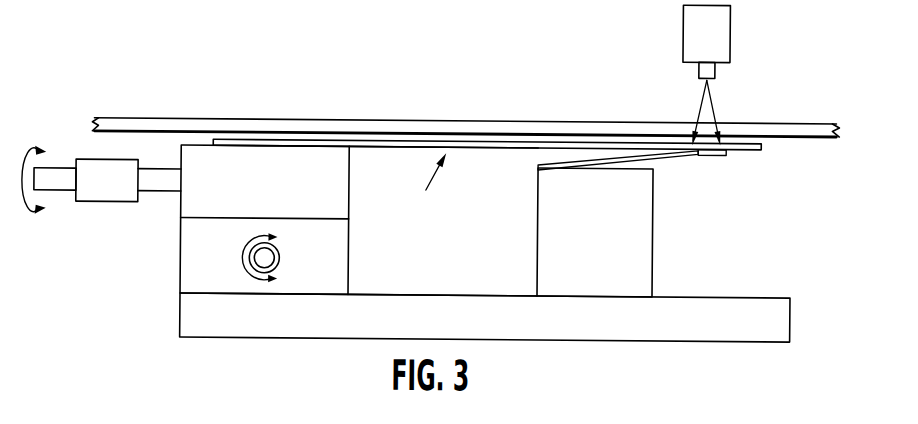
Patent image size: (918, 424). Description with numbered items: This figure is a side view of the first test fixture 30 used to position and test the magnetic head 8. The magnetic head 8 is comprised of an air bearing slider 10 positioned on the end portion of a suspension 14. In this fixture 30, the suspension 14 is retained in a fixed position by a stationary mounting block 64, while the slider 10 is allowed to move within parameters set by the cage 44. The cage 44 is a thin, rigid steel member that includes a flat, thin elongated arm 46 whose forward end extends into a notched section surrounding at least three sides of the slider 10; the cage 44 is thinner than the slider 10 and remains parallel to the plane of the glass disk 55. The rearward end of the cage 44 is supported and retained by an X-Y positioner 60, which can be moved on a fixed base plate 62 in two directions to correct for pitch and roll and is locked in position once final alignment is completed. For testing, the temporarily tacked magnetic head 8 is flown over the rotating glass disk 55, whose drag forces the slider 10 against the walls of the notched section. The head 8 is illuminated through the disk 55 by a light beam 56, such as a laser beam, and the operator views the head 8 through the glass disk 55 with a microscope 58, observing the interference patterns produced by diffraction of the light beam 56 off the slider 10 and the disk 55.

The magnetic head 8 is at (728, 160).
The air bearing slider 10 is at (698, 153).
The suspension 14 is at (567, 158).
The test fixture 30 is at (141, 243).
The cage 44 is at (430, 185).
The elongated arm 46 is at (275, 139).
The glass disk 55 is at (405, 127).
The light beam 56 is at (703, 93).
The microscope 58 is at (722, 26).
The X-Y positioner 60 is at (195, 268).
The fixed base plate 62 is at (653, 324).
The stationary mounting block 64 is at (558, 229).